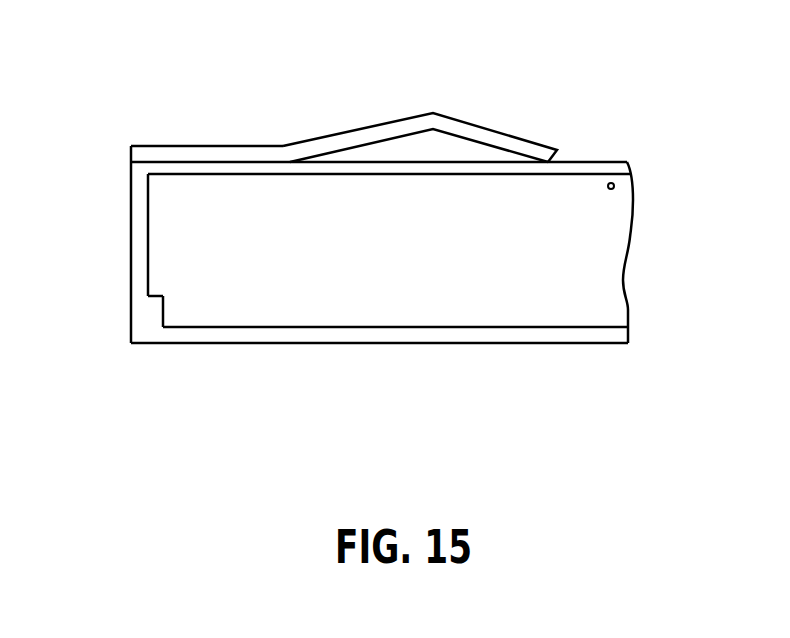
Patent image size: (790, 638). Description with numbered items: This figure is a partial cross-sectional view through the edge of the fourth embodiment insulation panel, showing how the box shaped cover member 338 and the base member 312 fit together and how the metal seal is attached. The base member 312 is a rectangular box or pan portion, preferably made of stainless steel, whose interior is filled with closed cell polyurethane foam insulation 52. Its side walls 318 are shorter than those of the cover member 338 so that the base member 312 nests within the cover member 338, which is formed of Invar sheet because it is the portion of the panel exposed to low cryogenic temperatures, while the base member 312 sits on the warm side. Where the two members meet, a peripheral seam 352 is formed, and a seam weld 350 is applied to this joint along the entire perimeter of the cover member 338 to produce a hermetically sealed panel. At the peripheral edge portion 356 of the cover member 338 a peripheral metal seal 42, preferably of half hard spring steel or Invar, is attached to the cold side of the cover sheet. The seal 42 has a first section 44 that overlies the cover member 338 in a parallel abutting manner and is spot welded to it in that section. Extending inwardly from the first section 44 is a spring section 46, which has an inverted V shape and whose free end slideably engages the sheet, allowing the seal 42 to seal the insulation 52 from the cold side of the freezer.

The peripheral metal seal 42 is at (472, 125).
The first section 44 is at (198, 146).
The spring section 46 is at (373, 134).
The insulation 52 is at (603, 235).
The base member 312 is at (510, 344).
The side walls 318 is at (165, 312).
The cover member 338 is at (131, 205).
The seam weld 350 is at (148, 343).
The peripheral seam 352 is at (150, 295).
The peripheral edge portion 356 is at (172, 164).